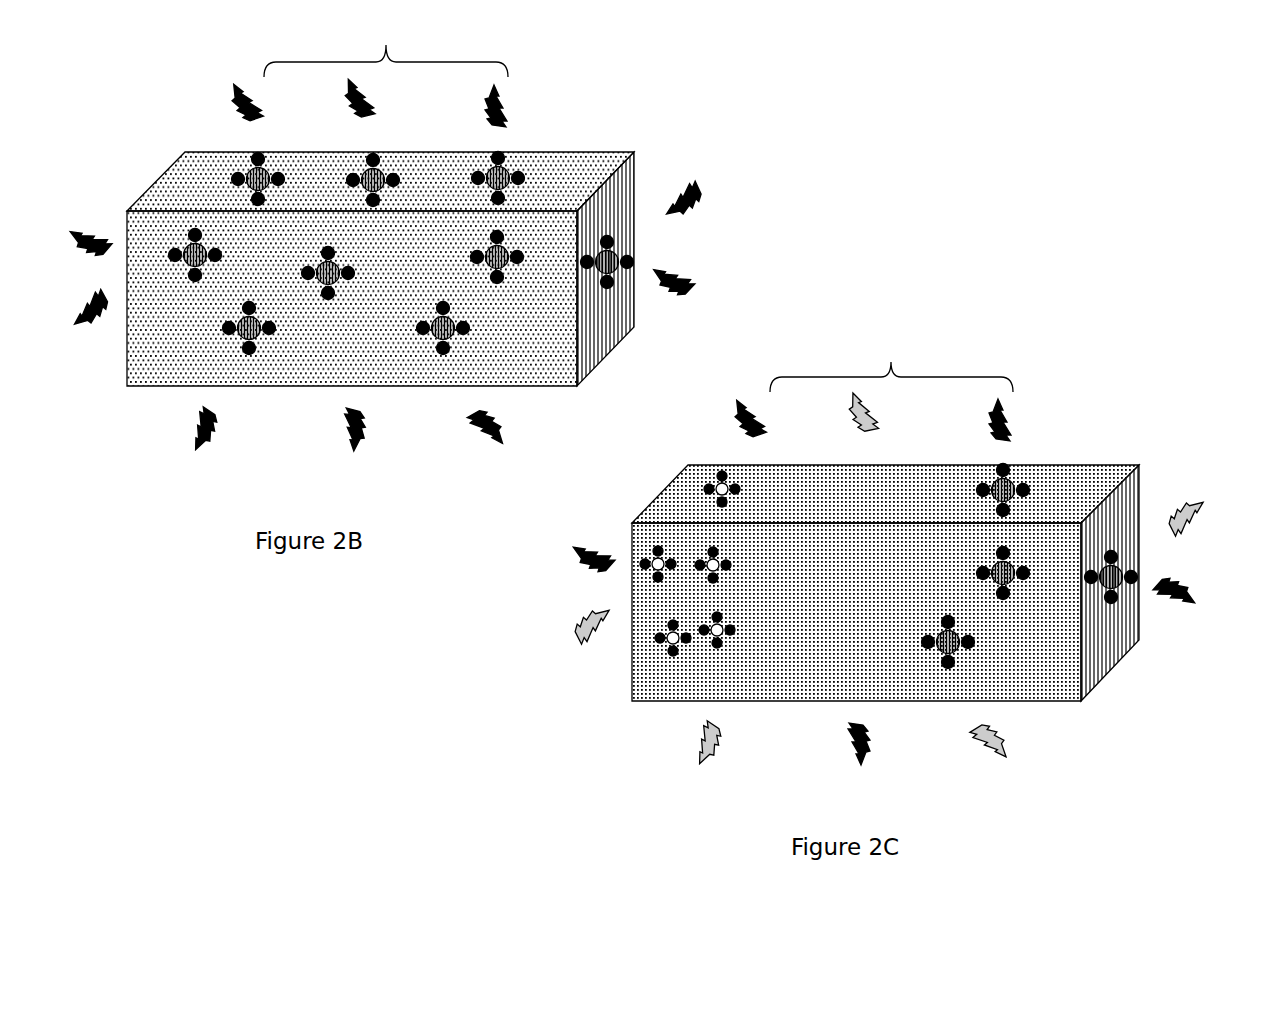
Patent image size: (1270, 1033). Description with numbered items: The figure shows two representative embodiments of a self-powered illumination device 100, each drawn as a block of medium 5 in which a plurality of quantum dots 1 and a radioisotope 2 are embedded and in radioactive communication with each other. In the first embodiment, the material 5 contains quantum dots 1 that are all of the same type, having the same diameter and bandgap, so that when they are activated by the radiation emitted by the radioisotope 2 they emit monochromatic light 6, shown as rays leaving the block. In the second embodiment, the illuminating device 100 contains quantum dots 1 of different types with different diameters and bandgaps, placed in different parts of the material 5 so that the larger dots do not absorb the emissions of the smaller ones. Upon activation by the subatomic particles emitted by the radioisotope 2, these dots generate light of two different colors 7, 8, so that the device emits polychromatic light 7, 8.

In FIG. 2B, the quantum dots 1 is at (217, 328).
In FIG. 2C, the quantum dots 1 is at (713, 501).
In FIG. 2B, the radioisotope 2 is at (438, 342).
In FIG. 2C, the radioisotope 2 is at (672, 647).
In FIG. 2B, the medium 5 is at (322, 348).
In FIG. 2C, the medium 5 is at (825, 662).
In FIG. 2B, the monochromatic light 6 is at (228, 106).
In FIG. 2C, the light of a first color 7 is at (733, 422).
In FIG. 2C, the light of a second color 8 is at (587, 641).
In FIG. 2B, the illumination device 100 is at (386, 71).
In FIG. 2C, the illumination device 100 is at (891, 387).